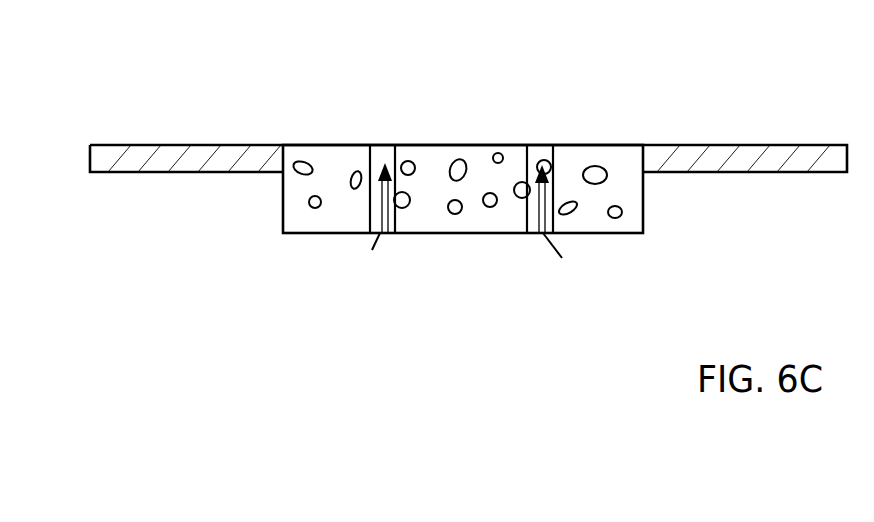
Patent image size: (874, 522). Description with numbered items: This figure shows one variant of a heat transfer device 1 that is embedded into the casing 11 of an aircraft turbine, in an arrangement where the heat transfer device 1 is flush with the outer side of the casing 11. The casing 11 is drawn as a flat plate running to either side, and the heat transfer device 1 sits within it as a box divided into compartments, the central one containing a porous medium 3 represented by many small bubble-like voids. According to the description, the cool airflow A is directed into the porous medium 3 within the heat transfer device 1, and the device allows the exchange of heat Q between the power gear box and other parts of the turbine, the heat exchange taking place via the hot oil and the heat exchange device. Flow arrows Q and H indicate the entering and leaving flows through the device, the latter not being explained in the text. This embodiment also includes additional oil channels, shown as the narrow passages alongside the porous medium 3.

The heat transfer device 1 is at (464, 136).
The porous medium 3 is at (472, 235).
The casing 11 is at (715, 163).
The cool airflow A is at (338, 163).
The gas flow H is at (612, 158).
The heat Q is at (353, 247).